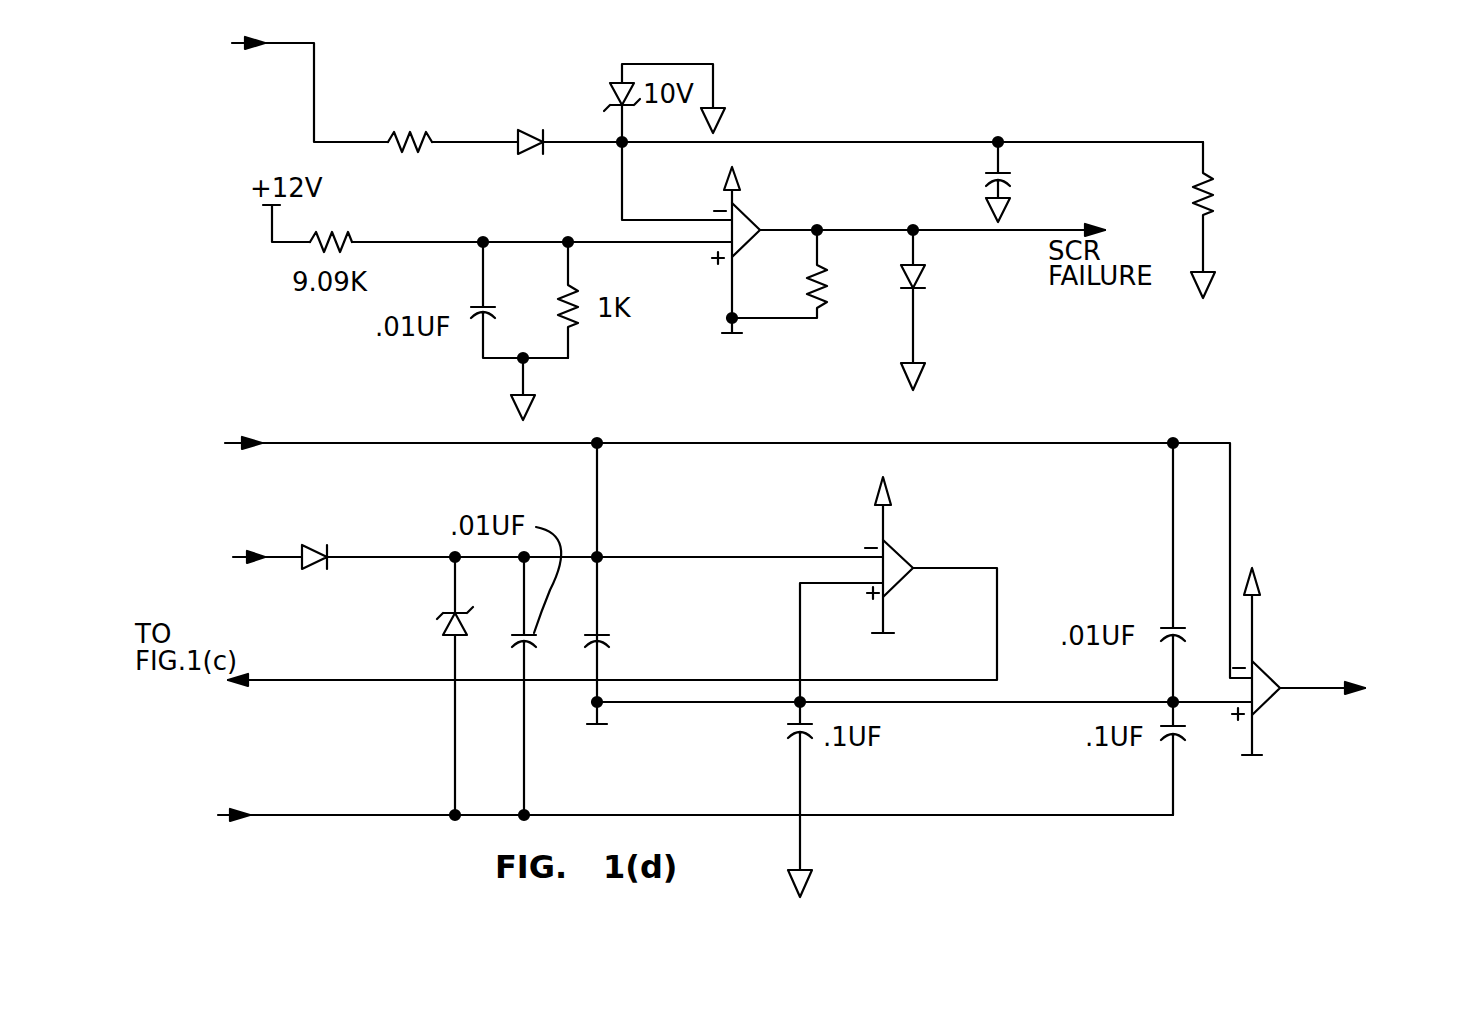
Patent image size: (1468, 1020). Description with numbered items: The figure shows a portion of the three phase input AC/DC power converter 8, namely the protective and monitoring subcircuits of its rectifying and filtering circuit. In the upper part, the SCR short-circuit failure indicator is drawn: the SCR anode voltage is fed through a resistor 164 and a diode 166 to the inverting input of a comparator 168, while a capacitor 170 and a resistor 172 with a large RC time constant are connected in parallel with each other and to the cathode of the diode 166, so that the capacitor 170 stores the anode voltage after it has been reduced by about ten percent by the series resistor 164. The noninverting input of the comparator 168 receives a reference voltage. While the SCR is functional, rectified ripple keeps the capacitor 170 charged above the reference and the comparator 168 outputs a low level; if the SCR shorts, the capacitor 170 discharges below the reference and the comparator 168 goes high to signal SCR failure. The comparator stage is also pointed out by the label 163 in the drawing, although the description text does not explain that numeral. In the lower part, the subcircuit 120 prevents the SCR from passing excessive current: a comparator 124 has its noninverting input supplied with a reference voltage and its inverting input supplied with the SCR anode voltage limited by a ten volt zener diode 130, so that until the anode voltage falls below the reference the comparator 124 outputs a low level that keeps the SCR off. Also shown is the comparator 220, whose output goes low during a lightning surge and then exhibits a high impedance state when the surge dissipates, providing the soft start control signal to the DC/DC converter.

The three phase input AC/DC power converter 8 is at (1280, 88).
The resistor 164 is at (432, 139).
The diode 166 is at (531, 150).
The comparator 163 is at (780, 213).
The comparator 168 is at (745, 240).
The capacitor 170 is at (1010, 177).
The resistor 172 is at (1208, 180).
The subcircuit 120 is at (772, 522).
The comparator 124 is at (900, 556).
The ten volt zener diode 130 is at (451, 612).
The comparator 220 is at (1268, 700).